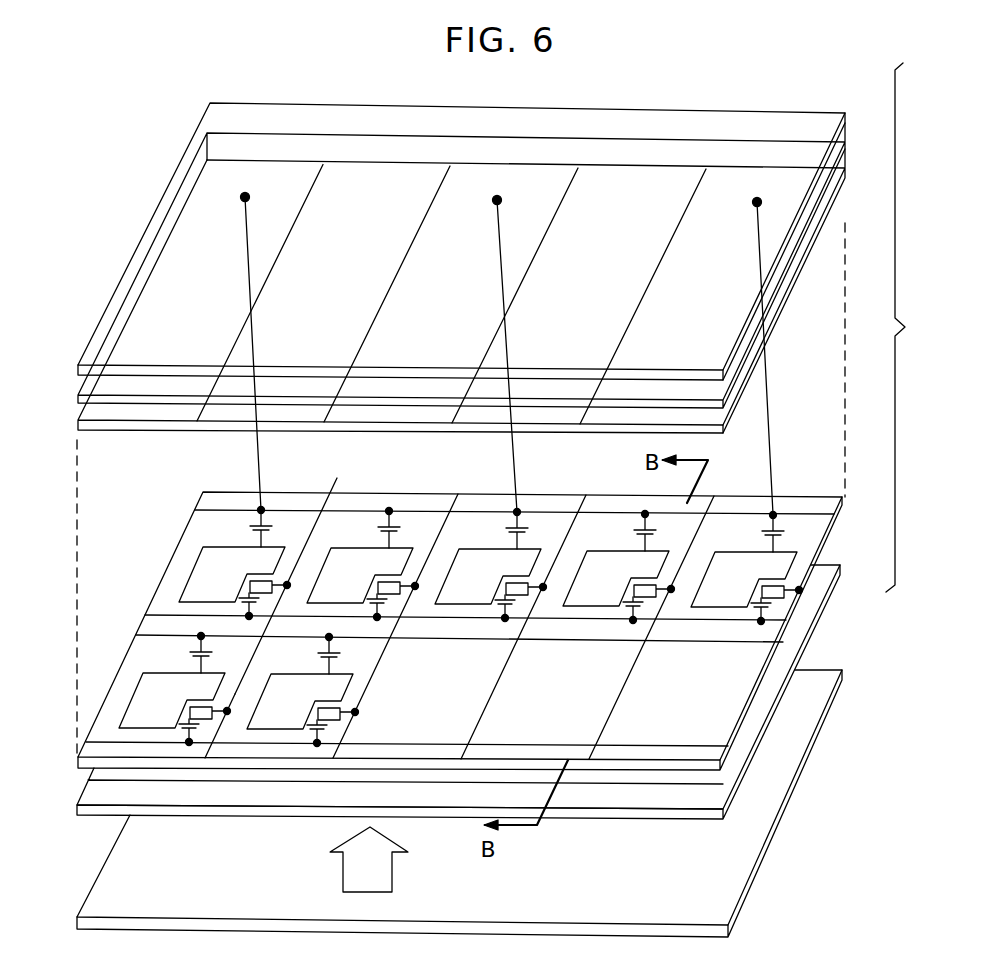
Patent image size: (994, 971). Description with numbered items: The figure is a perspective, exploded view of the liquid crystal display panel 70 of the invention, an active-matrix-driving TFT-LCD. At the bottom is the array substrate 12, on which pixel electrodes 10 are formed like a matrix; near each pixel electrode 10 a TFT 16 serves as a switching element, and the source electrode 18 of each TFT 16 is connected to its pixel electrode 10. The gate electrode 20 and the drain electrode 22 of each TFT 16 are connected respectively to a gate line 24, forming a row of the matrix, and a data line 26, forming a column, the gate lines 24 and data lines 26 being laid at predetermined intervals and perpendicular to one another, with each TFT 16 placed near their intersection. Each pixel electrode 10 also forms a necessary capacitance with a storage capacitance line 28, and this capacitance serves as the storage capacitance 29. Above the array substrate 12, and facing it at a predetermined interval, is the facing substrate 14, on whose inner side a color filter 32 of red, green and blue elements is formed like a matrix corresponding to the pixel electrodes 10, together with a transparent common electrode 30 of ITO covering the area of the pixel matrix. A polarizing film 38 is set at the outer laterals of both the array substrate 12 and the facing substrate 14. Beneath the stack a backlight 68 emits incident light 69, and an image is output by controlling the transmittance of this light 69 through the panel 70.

The pixel electrode 10 is at (207, 562).
The array substrate 12 is at (80, 770).
The facing substrate 14 is at (80, 402).
The TFT 16 is at (262, 586).
The source electrode 18 is at (248, 572).
The gate electrode 20 is at (187, 733).
The drain electrode 22 is at (474, 606).
The gate line 24 is at (167, 613).
The data line 26 is at (208, 752).
The storage capacitance line 28 is at (153, 635).
The storage capacitance 29 is at (177, 655).
The common electrode 30 is at (829, 223).
The color filter 32 is at (843, 200).
The polarizing film 38 is at (840, 130).
The backlight 68 is at (117, 855).
The incident light 69 is at (348, 867).
The liquid crystal display panel 70 is at (507, 408).